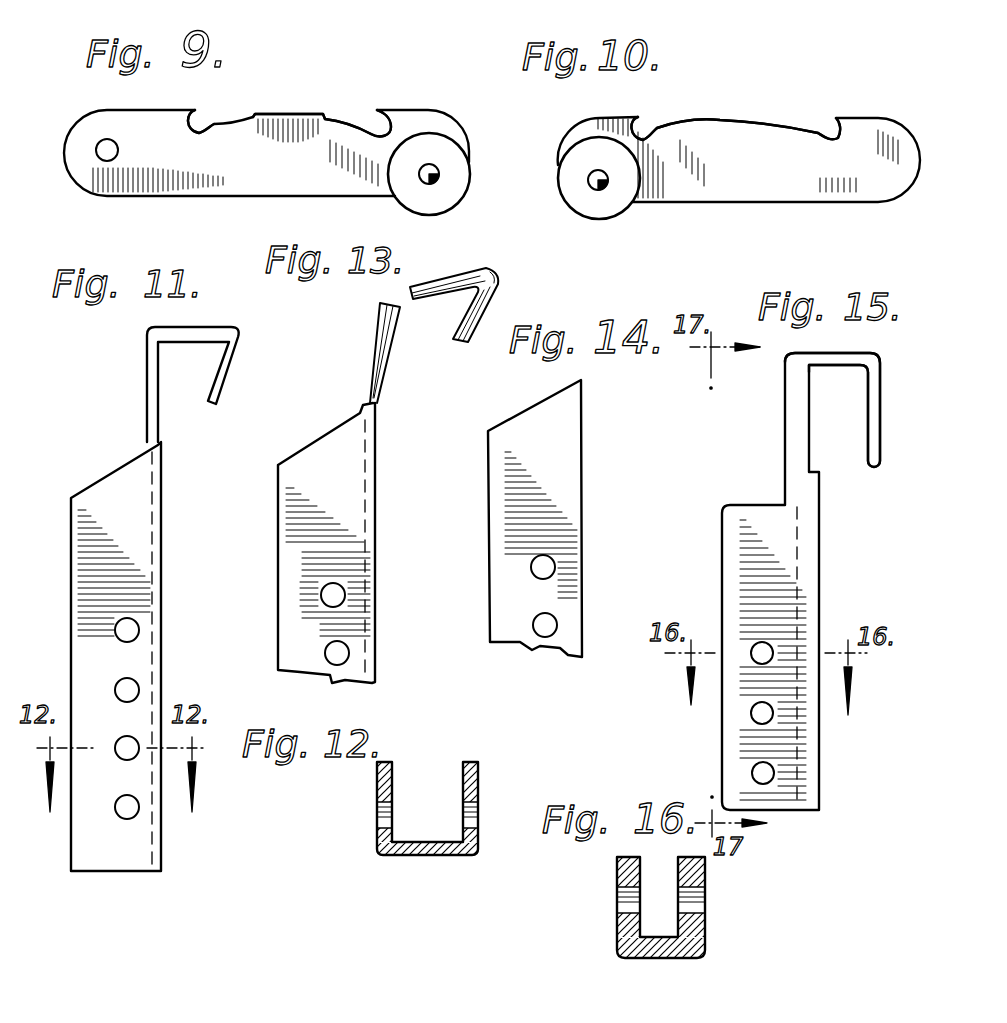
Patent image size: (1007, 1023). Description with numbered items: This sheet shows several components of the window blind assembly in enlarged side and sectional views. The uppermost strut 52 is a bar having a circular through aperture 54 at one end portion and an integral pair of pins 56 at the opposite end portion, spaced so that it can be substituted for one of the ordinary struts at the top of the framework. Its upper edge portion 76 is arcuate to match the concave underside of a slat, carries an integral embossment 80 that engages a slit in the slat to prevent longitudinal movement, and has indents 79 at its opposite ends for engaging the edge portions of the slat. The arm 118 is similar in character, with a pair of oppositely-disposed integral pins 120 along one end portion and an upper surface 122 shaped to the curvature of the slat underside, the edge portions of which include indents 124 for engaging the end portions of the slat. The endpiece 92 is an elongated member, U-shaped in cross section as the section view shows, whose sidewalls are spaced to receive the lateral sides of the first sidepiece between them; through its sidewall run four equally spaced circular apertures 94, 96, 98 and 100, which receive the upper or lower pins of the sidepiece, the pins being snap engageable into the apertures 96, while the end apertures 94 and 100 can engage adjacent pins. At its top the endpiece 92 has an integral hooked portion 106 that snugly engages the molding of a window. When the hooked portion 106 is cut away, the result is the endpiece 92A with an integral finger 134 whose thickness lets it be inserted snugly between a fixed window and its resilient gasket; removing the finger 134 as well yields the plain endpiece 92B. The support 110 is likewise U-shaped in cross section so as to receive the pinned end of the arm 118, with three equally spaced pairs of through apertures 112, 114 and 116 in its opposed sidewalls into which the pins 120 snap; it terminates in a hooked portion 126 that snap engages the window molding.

In FIG. 9, the uppermost strut 52 is at (237, 148).
In FIG. 9, the through aperture 54 is at (103, 153).
In FIG. 9, the pins 56 is at (434, 174).
In FIG. 9, the upper edge portion 76 is at (340, 120).
In FIG. 9, the indents 79 is at (200, 130).
In FIG. 9, the embossment 80 is at (288, 115).
In FIG. 10, the arm 118 is at (768, 133).
In FIG. 10, the pins 120 is at (595, 182).
In FIG. 10, the upper surface 122 is at (737, 90).
In FIG. 10, the indents 124 is at (648, 130).
In FIG. 11, the endpiece 92 is at (105, 492).
In FIG. 12, the endpiece 92 is at (392, 778).
In FIG. 13, the endpiece 92A is at (307, 477).
In FIG. 14, the endpiece 92B is at (515, 443).
In FIG. 11, the through aperture 94 is at (118, 812).
In FIG. 11, the through aperture 96 is at (120, 758).
In FIG. 12, the through aperture 96 is at (463, 813).
In FIG. 11, the through aperture 98 is at (115, 690).
In FIG. 13, the through aperture 98 is at (348, 652).
In FIG. 14, the through aperture 98 is at (553, 622).
In FIG. 11, the through aperture 100 is at (115, 630).
In FIG. 13, the through aperture 100 is at (345, 590).
In FIG. 14, the through aperture 100 is at (552, 566).
In FIG. 11, the hooked portion 106 is at (227, 375).
In FIG. 13, the finger 134 is at (375, 362).
In FIG. 15, the support 110 is at (733, 525).
In FIG. 16, the support 110 is at (617, 868).
In FIG. 15, the through aperture 112 is at (755, 647).
In FIG. 16, the through aperture 112 is at (698, 898).
In FIG. 15, the through aperture 114 is at (755, 712).
In FIG. 15, the through aperture 116 is at (758, 773).
In FIG. 15, the hooked portion 126 is at (877, 373).